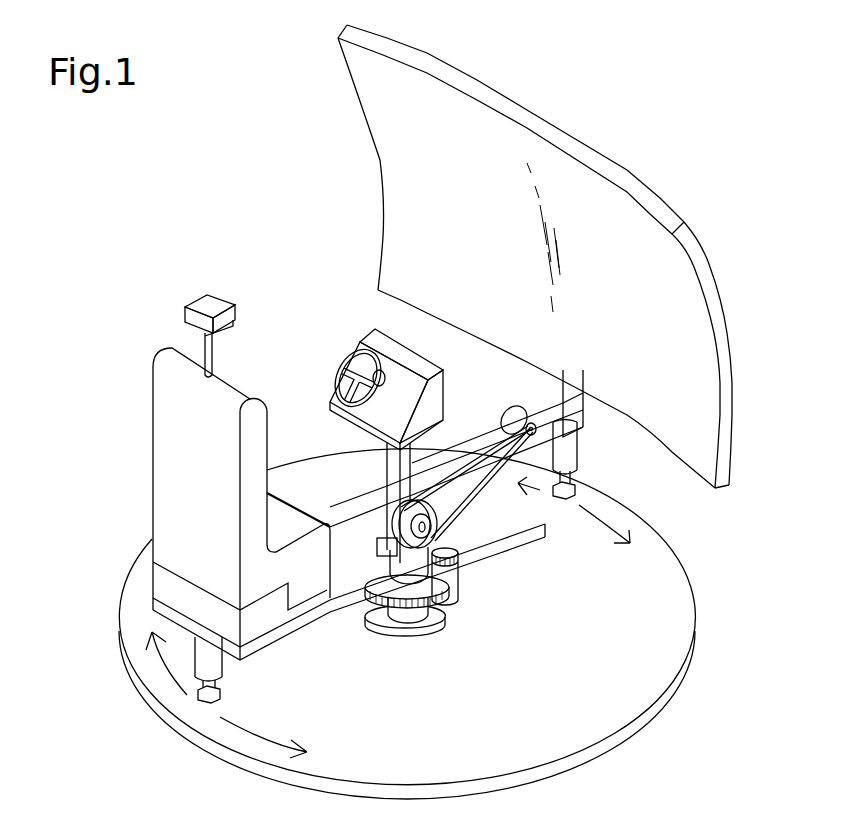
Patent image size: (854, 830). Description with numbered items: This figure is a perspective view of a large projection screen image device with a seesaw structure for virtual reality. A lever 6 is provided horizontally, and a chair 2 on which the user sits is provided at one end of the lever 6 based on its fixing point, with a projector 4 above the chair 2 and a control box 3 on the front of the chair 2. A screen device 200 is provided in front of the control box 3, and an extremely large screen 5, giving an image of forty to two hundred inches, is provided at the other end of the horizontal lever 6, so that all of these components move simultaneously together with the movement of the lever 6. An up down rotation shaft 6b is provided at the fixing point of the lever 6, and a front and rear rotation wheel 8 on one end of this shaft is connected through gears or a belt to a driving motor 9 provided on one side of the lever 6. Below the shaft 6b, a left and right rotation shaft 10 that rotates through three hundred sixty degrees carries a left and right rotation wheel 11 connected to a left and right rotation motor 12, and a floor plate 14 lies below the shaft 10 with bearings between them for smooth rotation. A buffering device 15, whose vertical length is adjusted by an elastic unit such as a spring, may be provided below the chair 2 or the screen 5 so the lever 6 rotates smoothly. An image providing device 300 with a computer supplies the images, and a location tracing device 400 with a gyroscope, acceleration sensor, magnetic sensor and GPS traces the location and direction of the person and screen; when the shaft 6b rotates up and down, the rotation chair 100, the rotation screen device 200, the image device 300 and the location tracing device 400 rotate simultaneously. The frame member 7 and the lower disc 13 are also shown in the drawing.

The rotation chair 100 is at (343, 485).
The rotation screen device 200 is at (542, 256).
The chair 2 is at (167, 465).
The control box 3 is at (352, 348).
The projector 4 is at (220, 297).
The location tracing device 400 is at (232, 328).
The screen 5 is at (408, 158).
The lever 6 is at (455, 468).
The up down rotation shaft 6b is at (426, 528).
The frame bar 7 is at (385, 498).
The front and rear rotation wheel 8 is at (495, 478).
The driving motor 9 is at (534, 412).
The left and right rotation shaft 10 is at (407, 618).
The left and right rotation wheel 11 is at (437, 582).
The left and right rotation motor 12 is at (458, 577).
The base disc 13 is at (438, 620).
The floor plate 14 is at (654, 571).
The buffering device 15 is at (575, 446).
The image providing device 300 is at (282, 615).